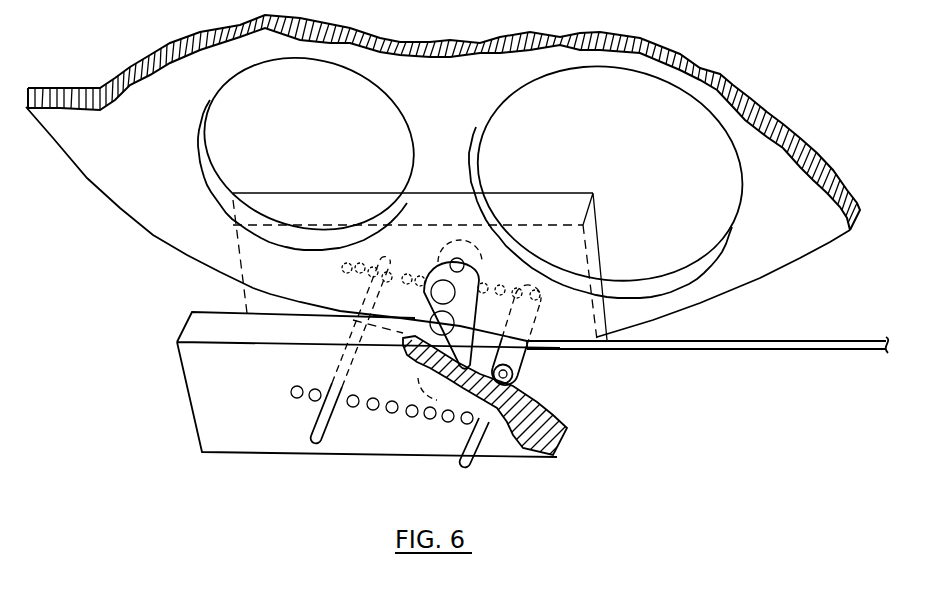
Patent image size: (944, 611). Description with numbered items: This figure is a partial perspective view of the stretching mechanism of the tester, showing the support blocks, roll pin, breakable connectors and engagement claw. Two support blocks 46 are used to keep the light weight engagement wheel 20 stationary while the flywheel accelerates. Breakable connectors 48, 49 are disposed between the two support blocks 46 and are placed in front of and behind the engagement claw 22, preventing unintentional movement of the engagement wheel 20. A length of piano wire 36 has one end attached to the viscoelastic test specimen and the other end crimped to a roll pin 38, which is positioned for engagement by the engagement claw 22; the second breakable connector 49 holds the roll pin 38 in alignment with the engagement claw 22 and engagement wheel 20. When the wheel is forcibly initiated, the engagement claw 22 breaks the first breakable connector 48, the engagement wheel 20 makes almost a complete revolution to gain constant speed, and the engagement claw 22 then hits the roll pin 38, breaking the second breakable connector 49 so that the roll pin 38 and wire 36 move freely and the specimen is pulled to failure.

The light weight engagement wheel 20 is at (122, 68).
The engagement claw 22 is at (424, 283).
The length of wire 36 is at (772, 338).
The roll pin 38 is at (523, 352).
The support blocks 46 is at (241, 294).
The first breakable connector 48 is at (345, 364).
The second breakable connector 49 is at (513, 371).